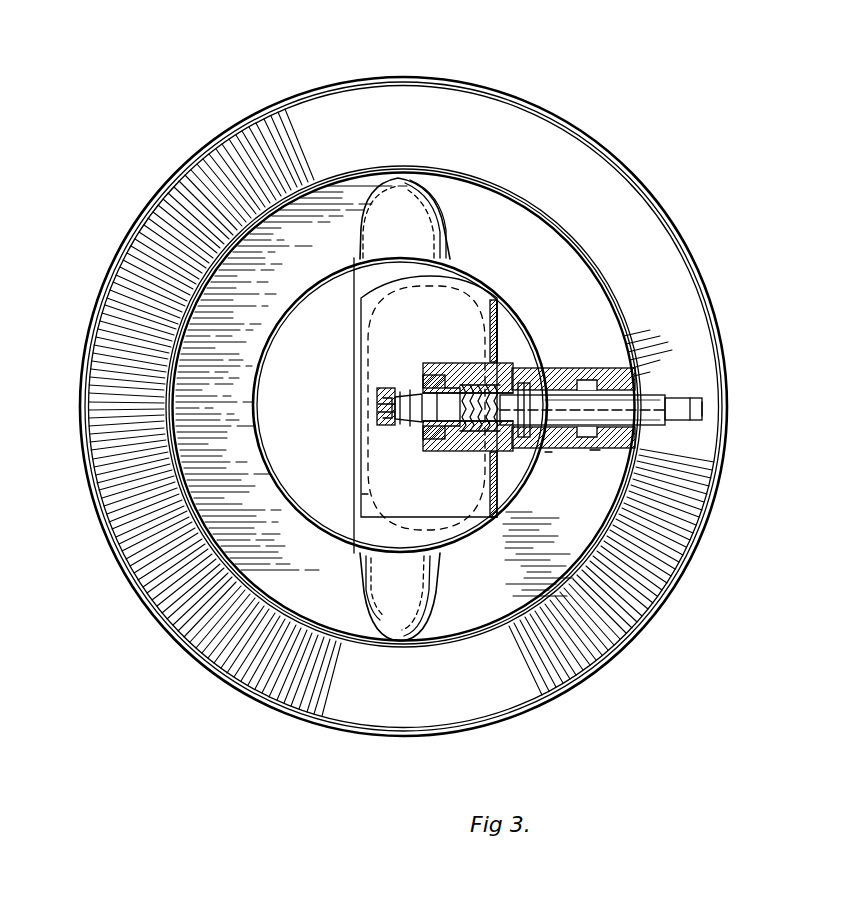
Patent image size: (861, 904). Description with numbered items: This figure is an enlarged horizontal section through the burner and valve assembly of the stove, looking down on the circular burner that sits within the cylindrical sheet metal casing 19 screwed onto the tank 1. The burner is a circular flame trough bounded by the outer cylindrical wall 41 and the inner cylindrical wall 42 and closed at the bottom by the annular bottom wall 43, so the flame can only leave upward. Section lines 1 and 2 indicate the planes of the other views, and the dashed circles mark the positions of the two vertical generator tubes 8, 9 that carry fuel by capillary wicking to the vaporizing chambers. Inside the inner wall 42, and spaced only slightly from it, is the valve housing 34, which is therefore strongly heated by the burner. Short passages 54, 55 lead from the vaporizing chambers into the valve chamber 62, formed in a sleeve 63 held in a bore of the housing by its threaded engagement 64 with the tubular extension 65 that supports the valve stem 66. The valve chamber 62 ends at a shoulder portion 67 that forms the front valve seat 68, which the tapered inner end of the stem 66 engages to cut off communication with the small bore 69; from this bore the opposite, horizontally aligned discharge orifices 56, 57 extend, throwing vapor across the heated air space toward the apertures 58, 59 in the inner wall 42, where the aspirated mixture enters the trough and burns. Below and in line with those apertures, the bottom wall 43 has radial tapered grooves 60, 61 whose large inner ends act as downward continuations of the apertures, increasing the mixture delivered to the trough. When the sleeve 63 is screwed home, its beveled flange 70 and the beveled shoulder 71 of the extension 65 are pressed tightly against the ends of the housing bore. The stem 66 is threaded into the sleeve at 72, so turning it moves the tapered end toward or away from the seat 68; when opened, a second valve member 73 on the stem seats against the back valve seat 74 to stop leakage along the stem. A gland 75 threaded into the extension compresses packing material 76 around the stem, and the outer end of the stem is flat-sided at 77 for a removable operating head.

The tank 1 is at (406, 135).
The section line 2- 2 is at (84, 401).
The generator tube 8 is at (362, 323).
The generator tube 9 is at (362, 495).
The casing 19 is at (656, 196).
The valve housing 34 is at (437, 452).
The outer cylindrical wall 41 is at (180, 357).
The inner cylindrical wall 42 is at (260, 363).
The bottom wall 43 is at (442, 208).
The passage 54 is at (462, 358).
The passage 55 is at (451, 452).
The discharge orifice 56 is at (412, 386).
The discharge orifice 57 is at (405, 426).
The aperture 58 is at (444, 256).
The aperture 59 is at (378, 566).
The groove 60 is at (418, 229).
The groove 61 is at (430, 589).
The valve chamber 62 is at (432, 369).
The sleeve 63 is at (515, 372).
The threaded engagement 64 is at (536, 372).
The tubular extension 65 is at (646, 347).
The valve stem 66 is at (665, 401).
The shoulder portion 67 is at (410, 429).
The front valve seat 68 is at (383, 417).
The small bore 69 is at (386, 406).
The beveled flange 70 is at (418, 363).
The beveled shoulder 71 is at (497, 362).
The threaded engagement 72 is at (504, 451).
The second valve member 73 is at (548, 391).
The back valve seat 74 is at (548, 453).
The gland 75 is at (652, 383).
The packing material 76 is at (592, 451).
The flat-sided portion 77 is at (696, 429).